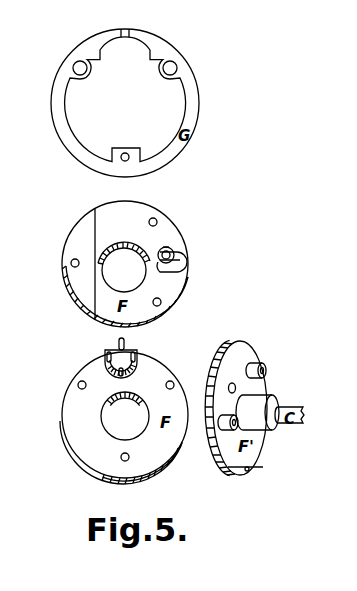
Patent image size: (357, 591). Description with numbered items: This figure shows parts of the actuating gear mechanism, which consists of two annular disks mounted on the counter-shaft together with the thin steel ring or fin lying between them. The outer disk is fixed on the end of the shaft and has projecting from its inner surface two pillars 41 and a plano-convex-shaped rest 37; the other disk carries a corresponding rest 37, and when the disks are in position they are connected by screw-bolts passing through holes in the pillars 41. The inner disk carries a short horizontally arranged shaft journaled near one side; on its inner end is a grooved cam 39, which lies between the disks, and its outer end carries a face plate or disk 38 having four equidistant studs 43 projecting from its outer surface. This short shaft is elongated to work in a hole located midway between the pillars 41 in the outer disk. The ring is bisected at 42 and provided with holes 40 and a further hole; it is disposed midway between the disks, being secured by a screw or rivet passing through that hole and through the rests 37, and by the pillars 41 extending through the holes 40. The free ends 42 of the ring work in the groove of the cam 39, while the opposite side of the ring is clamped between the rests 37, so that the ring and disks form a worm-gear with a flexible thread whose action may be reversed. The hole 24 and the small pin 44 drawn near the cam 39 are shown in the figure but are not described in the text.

The hole 24 is at (126, 152).
The plano-convex-shaped rest 37 is at (258, 481).
The face plate or disk 38 is at (121, 364).
The grooved cam 39 is at (178, 263).
The holes 40 is at (73, 68).
The pillars 41 is at (266, 371).
The free ends of the ring 42 is at (128, 26).
The studs 43 is at (118, 340).
The pin 44 is at (168, 247).